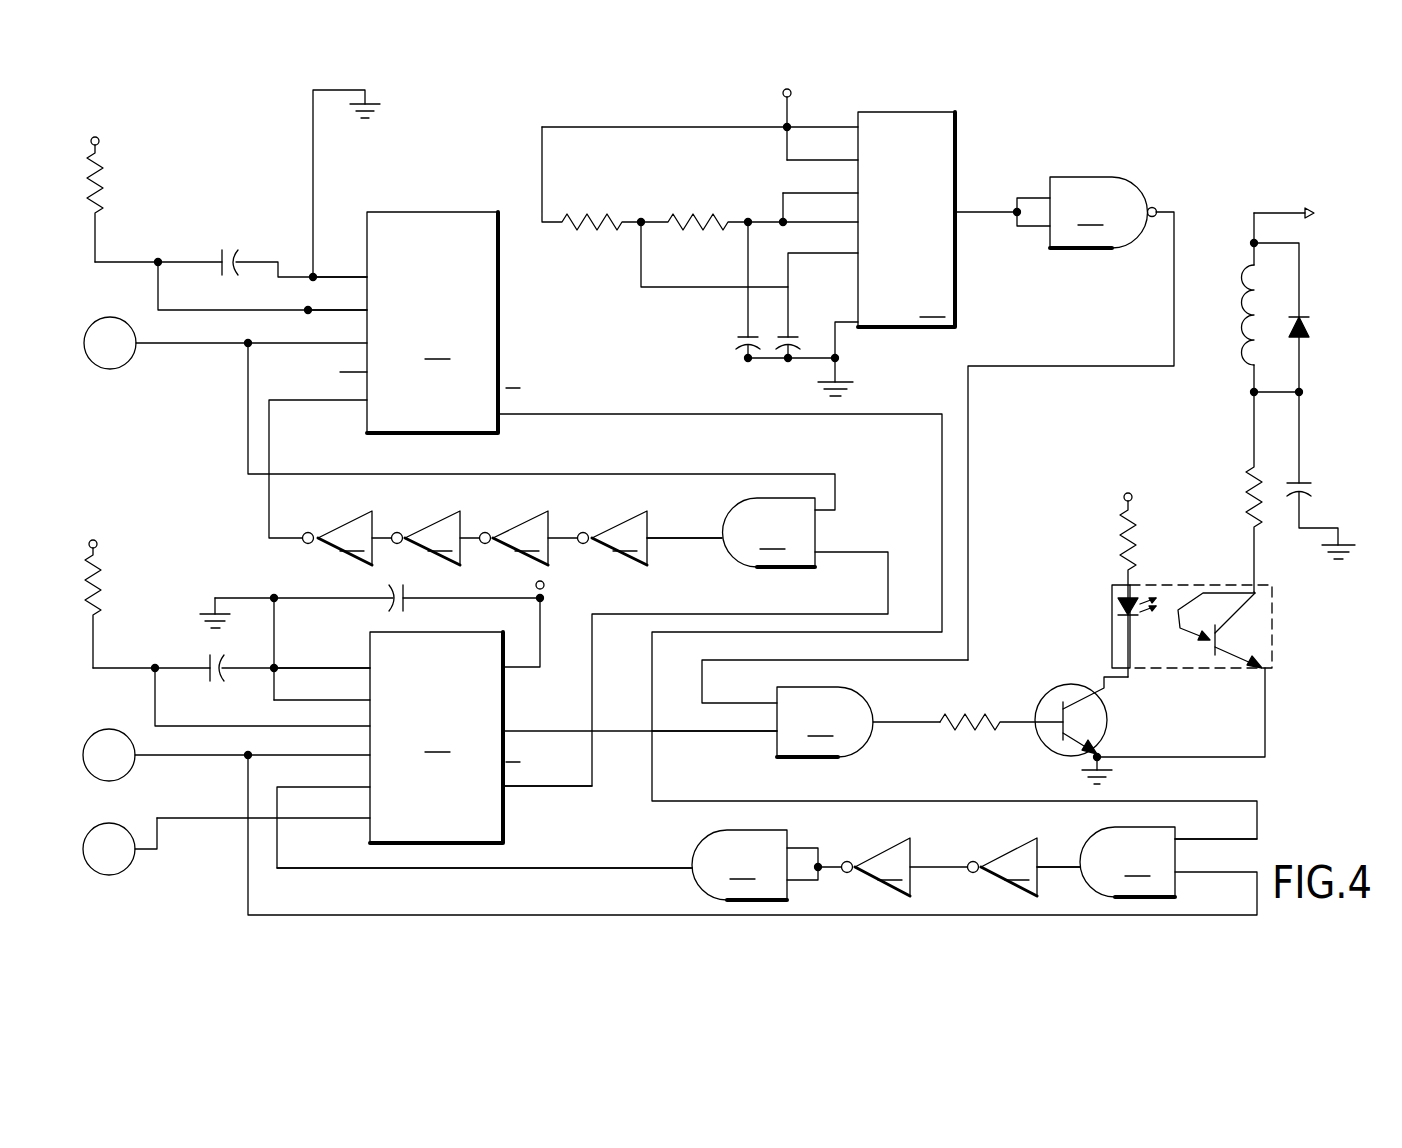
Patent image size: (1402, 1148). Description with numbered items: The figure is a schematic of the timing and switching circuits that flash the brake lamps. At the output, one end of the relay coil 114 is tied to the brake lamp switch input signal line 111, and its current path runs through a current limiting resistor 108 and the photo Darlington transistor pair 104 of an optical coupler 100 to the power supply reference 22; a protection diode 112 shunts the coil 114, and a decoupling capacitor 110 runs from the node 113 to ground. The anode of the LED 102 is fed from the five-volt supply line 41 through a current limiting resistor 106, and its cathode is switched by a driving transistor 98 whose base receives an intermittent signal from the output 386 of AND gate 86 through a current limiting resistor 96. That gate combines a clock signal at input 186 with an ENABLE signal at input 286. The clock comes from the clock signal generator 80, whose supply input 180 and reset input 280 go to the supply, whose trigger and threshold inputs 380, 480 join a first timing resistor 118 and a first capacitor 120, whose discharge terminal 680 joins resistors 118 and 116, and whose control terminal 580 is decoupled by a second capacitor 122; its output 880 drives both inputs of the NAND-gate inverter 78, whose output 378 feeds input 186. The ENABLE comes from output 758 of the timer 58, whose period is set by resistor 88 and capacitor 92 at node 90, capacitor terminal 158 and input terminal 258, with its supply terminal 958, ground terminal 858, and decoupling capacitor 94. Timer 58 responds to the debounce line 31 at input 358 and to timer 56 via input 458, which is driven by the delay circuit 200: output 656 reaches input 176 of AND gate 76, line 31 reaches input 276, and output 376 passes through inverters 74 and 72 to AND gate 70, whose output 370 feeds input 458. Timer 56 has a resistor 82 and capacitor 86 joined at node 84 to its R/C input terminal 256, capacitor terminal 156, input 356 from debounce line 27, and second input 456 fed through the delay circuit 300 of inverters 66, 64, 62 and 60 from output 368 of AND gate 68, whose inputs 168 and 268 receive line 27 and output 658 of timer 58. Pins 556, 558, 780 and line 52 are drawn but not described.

The 5-volt supply line 41 is at (99, 141).
The power supply reference 22 is at (368, 122).
The resistor 82 is at (100, 210).
The node 84 is at (160, 260).
The capacitor / AND gate 86 is at (236, 250).
The second timer circuit 56 is at (444, 322).
The input terminal of timer 56 156 is at (365, 277).
The R/C input terminal of timer 56 256 is at (365, 310).
The input of timer 56 356 is at (365, 343).
The second input of timer 56 456 is at (365, 372).
The timer CLR input 556 is at (365, 400).
The brake switch debounce circuit line 27 is at (198, 352).
The output of timer 56 656 is at (500, 415).
The delay circuit 300 is at (513, 520).
The inverter 60 is at (347, 538).
The inverter 62 is at (436, 538).
The inverter 64 is at (529, 538).
The inverter 66 is at (650, 538).
The AND gate 68 is at (769, 532).
The input of AND gate 68 168 is at (822, 511).
The input of AND gate 68 268 is at (822, 553).
The output of AND gate 68 368 is at (690, 545).
The resistor 88 is at (98, 615).
The node 90 is at (153, 670).
The capacitor 92 is at (218, 680).
The decoupling capacitor 94 is at (405, 606).
The timer circuit 58 is at (446, 737).
The ground connection terminal 858 is at (366, 668).
The capacitor terminal of timer 58 158 is at (366, 700).
The input terminal of timer 58 258 is at (366, 726).
The input terminal of timer 58 358 is at (366, 755).
The input of timer 58 458 is at (366, 787).
The timer CLR input 558 is at (366, 818).
The power supply input terminal 958 is at (525, 668).
The output terminal of timer 58 758 is at (510, 732).
The output of timer 58 658 is at (512, 787).
The brake switch debounce circuit output line 31 is at (193, 760).
The input C line 52 is at (207, 820).
The delay circuit 200 is at (886, 851).
The AND gate 70 is at (766, 865).
The inverter 72 is at (905, 867).
The inverter 74 is at (1024, 867).
The output of AND gate 70 370 is at (668, 868).
The AND gate 76 is at (1127, 862).
The output of AND gate 76 376 is at (1067, 862).
The input of AND gate 76 176 is at (1183, 840).
The input of AND gate 76 276 is at (1183, 872).
The input of AND gate 86 186 is at (770, 703).
The input of AND gate 86 286 is at (752, 731).
The output of AND gate 86 386 is at (912, 722).
The current limiting resistor 96 is at (945, 718).
The driving transistor 98 is at (1050, 692).
The current limiting resistor 106 is at (1138, 548).
The LED 102 is at (1118, 600).
The optical coupler 100 is at (1275, 592).
The photo Darlington transistor pair 104 is at (1245, 640).
The clock signal generator 80 is at (906, 219).
The voltage supply input 180 is at (856, 128).
The reset input 280 is at (856, 160).
The trigger input 380 is at (856, 190).
The threshold input 480 is at (856, 219).
The control terminal 580 is at (856, 251).
The discharge terminal 680 is at (856, 284).
The clock generator input 780 is at (856, 319).
The second timing resistor 116 is at (592, 232).
The first timing resistor 118 is at (692, 232).
The first capacitor 120 is at (745, 336).
The second capacitor 122 is at (776, 336).
The clock generator output 880 is at (1002, 212).
The inverter 78 is at (1103, 212).
The output of inverter 78 378 is at (1178, 213).
The brake lamp switch input signal line 111 is at (1288, 213).
The relay coil 114 is at (1248, 344).
The protection diode 112 is at (1305, 322).
The node 113 is at (1252, 392).
The current limiting resistor 108 is at (1252, 467).
The decoupling capacitor 110 is at (1305, 478).